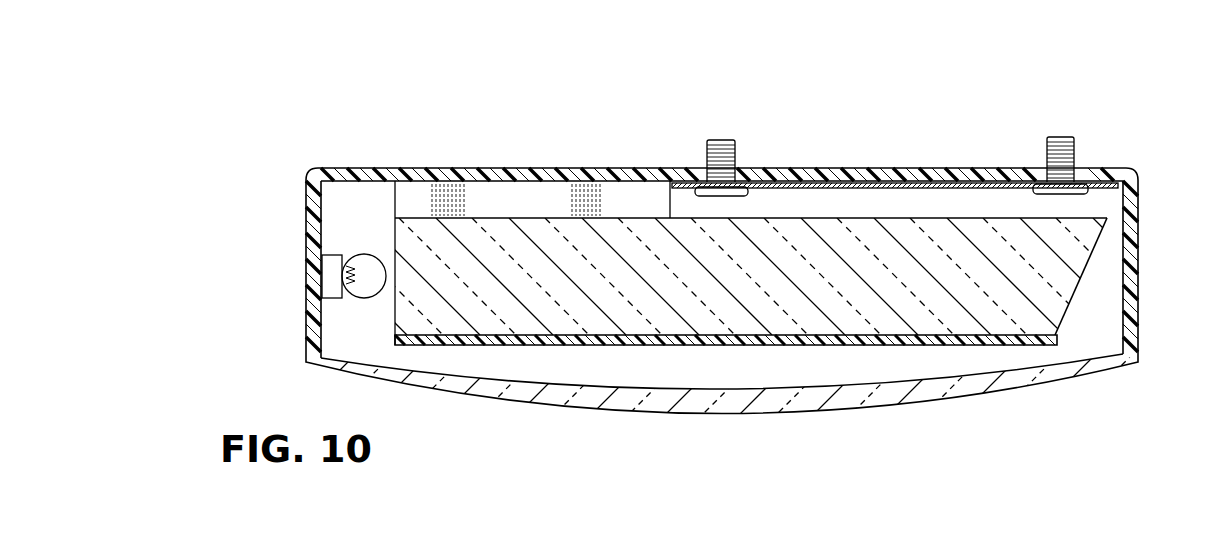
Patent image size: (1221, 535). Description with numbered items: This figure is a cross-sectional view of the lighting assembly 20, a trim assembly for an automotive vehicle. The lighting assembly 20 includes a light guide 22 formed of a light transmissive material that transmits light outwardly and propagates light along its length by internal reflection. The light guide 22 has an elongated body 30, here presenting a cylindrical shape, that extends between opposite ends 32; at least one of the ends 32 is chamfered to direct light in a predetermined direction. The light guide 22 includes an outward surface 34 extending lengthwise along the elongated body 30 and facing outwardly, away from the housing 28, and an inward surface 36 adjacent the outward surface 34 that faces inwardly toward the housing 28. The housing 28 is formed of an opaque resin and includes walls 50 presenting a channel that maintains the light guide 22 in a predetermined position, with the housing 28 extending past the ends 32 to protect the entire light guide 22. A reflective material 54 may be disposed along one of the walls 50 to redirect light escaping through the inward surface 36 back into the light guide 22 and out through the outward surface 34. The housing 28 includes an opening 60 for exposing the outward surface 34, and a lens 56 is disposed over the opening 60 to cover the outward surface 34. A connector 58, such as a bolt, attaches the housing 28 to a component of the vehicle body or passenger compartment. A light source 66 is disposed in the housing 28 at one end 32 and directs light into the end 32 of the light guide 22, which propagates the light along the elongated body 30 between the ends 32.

The lighting assembly 20 is at (1162, 142).
The light guide 22 is at (639, 213).
The housing 28 is at (982, 166).
The elongated body 30 is at (820, 240).
The ends 32 is at (1085, 302).
The outward surface 34 is at (458, 346).
The inward surface 36 is at (491, 216).
The walls 50 is at (356, 168).
The reflective material 54 is at (922, 186).
The lens 56 is at (882, 404).
The connector 58 is at (722, 140).
The opening 60 is at (735, 371).
The light source 66 is at (328, 272).